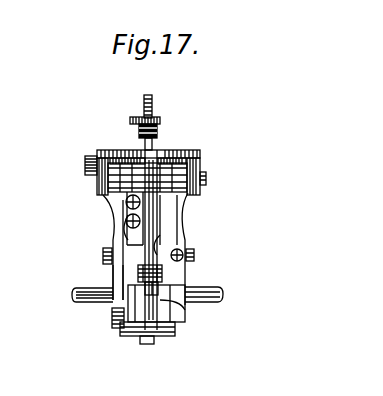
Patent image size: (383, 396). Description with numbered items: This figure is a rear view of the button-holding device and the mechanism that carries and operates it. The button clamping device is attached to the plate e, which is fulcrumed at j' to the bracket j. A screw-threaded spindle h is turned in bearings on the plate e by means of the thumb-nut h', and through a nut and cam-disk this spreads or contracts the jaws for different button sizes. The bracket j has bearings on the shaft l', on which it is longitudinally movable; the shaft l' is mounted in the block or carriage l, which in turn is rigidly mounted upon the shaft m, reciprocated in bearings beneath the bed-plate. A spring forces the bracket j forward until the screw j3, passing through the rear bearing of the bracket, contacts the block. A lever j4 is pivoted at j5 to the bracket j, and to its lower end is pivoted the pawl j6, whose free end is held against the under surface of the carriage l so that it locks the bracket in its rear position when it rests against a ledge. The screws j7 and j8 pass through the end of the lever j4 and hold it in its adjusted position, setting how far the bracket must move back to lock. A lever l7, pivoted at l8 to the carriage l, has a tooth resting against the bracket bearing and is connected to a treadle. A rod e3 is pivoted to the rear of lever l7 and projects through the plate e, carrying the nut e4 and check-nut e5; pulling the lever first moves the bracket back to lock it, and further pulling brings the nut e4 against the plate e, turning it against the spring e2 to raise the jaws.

The plate e is at (180, 158).
The spring e2 is at (160, 158).
The rod e3 is at (155, 252).
The nut e4 is at (140, 138).
The check-nut e5 is at (158, 120).
The screw-threaded spindle h is at (161, 170).
The thumb-nut h' is at (81, 157).
The bracket j is at (155, 240).
The fulcrum j' is at (211, 180).
The screw j3 is at (192, 252).
The lever j4 is at (128, 250).
The pivot j5 is at (104, 250).
The pawl j6 is at (120, 324).
The screw j7 is at (126, 222).
The screw j8 is at (125, 204).
The block or carriage l is at (174, 250).
The shaft l' is at (155, 272).
The lever l7 is at (178, 325).
The pivot l8 is at (192, 318).
The shaft m is at (74, 294).